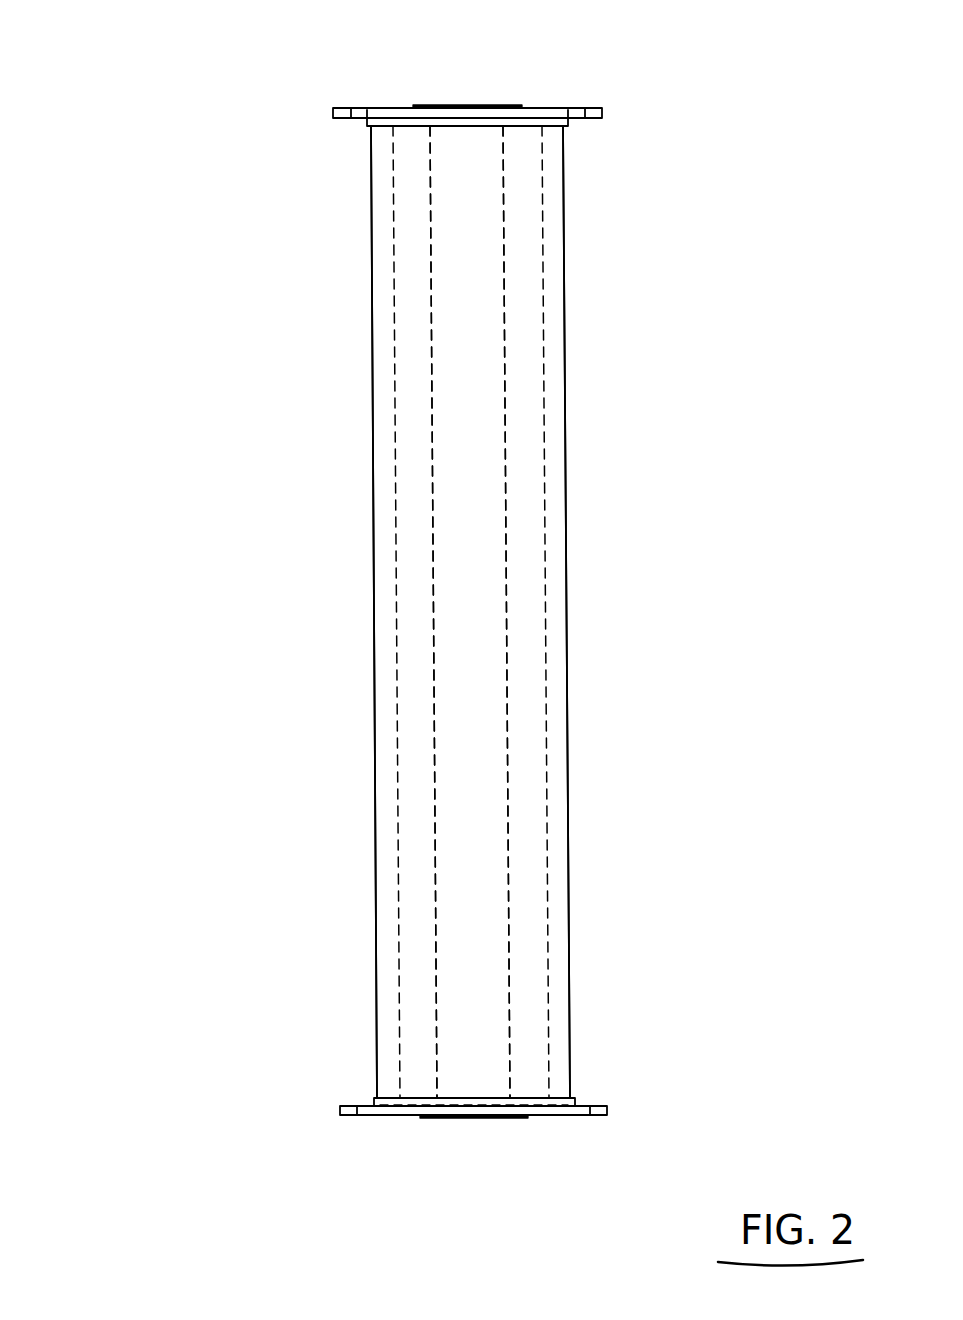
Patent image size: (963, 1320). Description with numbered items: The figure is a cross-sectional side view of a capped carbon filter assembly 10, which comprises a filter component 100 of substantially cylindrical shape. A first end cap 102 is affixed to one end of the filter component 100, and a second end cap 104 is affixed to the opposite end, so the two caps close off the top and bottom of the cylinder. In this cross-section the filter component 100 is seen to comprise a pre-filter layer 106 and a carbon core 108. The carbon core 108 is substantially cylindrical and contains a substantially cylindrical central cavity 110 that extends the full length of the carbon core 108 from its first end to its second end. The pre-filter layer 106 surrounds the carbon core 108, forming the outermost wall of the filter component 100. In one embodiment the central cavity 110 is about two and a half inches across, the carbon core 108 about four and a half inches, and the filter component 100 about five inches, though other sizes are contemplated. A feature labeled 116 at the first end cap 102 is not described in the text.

The capped carbon filter assembly 10 is at (188, 202).
The filter component 100 is at (573, 1020).
The first end cap 102 is at (548, 107).
The second end cap 104 is at (360, 1115).
The pre-filter layer 106 is at (380, 680).
The carbon core 108 is at (408, 503).
The central cavity 110 is at (480, 862).
The port plate 116 is at (478, 107).